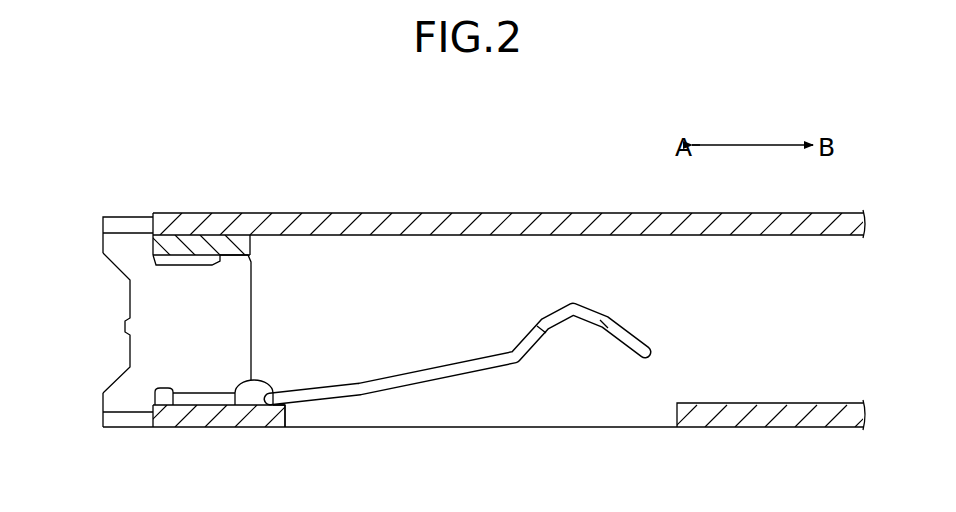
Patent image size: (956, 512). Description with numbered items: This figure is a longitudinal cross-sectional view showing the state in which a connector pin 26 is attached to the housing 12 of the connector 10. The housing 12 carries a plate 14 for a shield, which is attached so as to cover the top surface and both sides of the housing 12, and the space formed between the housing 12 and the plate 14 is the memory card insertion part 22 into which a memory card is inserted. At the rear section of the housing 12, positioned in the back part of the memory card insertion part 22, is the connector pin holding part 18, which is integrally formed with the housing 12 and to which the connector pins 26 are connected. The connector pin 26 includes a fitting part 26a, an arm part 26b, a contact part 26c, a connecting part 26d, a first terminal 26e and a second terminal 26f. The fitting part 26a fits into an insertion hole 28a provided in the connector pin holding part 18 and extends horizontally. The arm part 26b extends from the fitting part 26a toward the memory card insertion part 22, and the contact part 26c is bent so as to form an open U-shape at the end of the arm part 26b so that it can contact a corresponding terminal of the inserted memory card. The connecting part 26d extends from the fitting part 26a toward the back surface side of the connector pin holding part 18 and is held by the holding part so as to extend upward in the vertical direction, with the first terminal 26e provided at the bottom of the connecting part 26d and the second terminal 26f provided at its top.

The connector 10 is at (406, 142).
The housing 12 is at (780, 415).
The plate 14 is at (553, 213).
The connector pin holding part 18 is at (200, 417).
The memory card insertion part 22 is at (447, 260).
The connector pin 26 is at (121, 325).
The fitting part 26a is at (215, 392).
The arm part 26b is at (388, 380).
The contact part 26c is at (578, 303).
The connecting part 26d is at (150, 295).
The first terminal 26e is at (120, 427).
The second terminal 26f is at (125, 226).
The insertion hole 28a is at (277, 427).